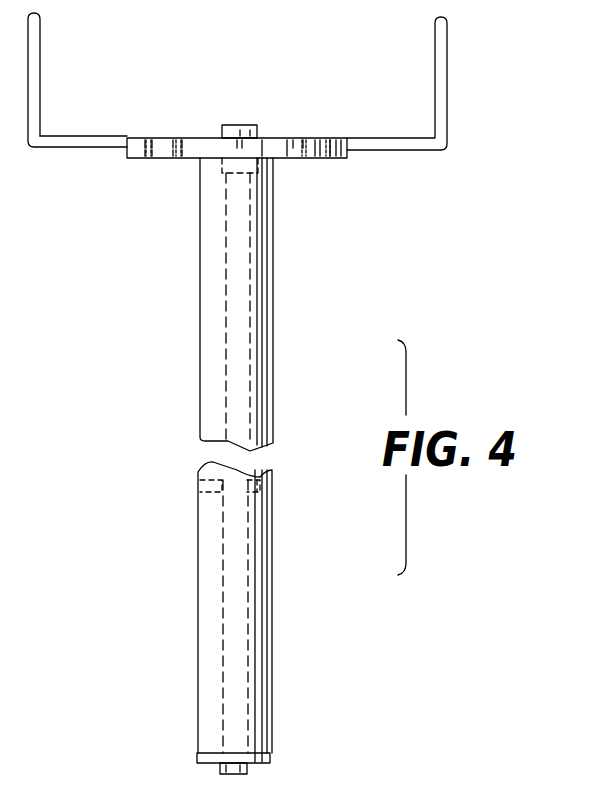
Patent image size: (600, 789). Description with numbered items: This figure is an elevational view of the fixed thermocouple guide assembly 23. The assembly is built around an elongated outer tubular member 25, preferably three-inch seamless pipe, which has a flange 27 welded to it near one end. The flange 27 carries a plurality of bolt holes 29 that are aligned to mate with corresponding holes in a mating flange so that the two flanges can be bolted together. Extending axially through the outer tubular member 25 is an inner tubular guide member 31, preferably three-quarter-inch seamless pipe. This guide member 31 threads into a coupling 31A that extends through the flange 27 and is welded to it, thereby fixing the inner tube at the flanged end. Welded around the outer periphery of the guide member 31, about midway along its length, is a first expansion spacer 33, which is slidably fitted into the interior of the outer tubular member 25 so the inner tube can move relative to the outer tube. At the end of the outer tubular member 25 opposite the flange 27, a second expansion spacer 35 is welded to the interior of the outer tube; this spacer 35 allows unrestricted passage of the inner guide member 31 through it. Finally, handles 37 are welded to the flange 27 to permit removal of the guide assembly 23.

The thermocouple guide assembly 23 is at (303, 262).
The elongated outer tubular member 25 is at (273, 358).
The flange 27 is at (345, 156).
The bolt holes 29 is at (150, 138).
The inner tubular guide member 31 is at (248, 575).
The coupling 31A is at (225, 165).
The first expansion spacer 33 is at (202, 487).
The second expansion spacer 35 is at (262, 764).
The handles 37 is at (440, 65).